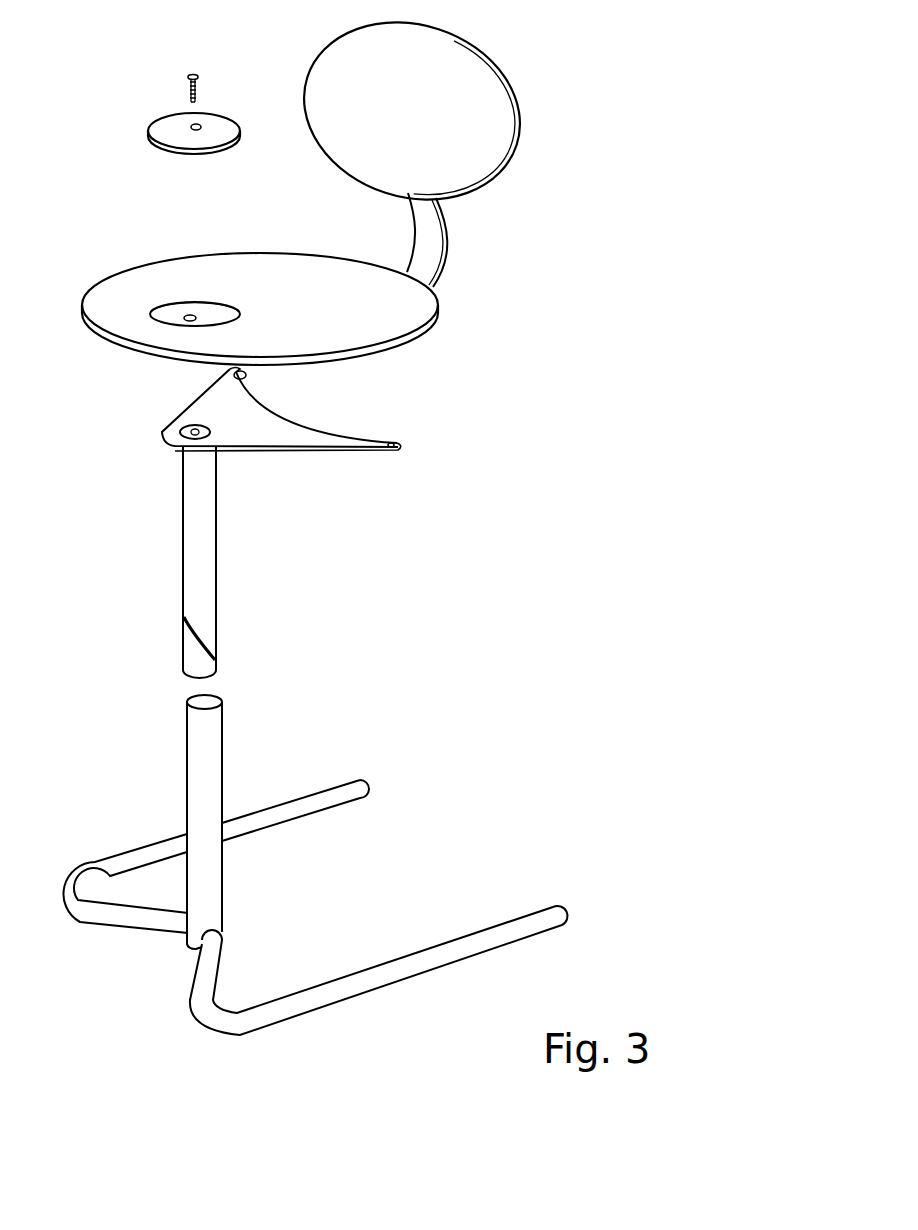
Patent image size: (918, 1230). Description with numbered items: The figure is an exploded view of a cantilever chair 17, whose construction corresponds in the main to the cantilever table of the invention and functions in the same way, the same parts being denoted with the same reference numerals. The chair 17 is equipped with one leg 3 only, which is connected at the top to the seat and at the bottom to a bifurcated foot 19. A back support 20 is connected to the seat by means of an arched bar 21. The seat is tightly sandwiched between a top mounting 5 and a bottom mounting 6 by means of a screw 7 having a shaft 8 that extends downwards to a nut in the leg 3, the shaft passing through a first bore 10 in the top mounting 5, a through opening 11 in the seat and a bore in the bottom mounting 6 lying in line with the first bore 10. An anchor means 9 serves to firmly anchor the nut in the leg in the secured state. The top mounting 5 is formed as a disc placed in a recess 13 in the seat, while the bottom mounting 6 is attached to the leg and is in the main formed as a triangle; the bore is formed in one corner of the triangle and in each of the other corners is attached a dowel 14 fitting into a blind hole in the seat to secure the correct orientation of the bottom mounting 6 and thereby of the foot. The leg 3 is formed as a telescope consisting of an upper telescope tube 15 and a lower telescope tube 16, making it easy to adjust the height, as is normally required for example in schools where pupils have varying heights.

The leg 3 is at (218, 540).
The top mounting 5 is at (165, 133).
The bottom mounting 6 is at (283, 437).
The screw 7 is at (191, 75).
The shaft 8 is at (199, 95).
The anchor means 9 is at (192, 662).
The first bore 10 is at (190, 133).
The through opening 11 is at (195, 317).
The recess 13 is at (173, 315).
The dowel 14 is at (244, 378).
The upper telescope tube 15 is at (182, 548).
The lower telescope tube 16 is at (186, 758).
The cantilever chair 17 is at (168, 570).
The bifurcated foot 19 is at (428, 948).
The back support 20 is at (495, 63).
The arched bar 21 is at (447, 258).